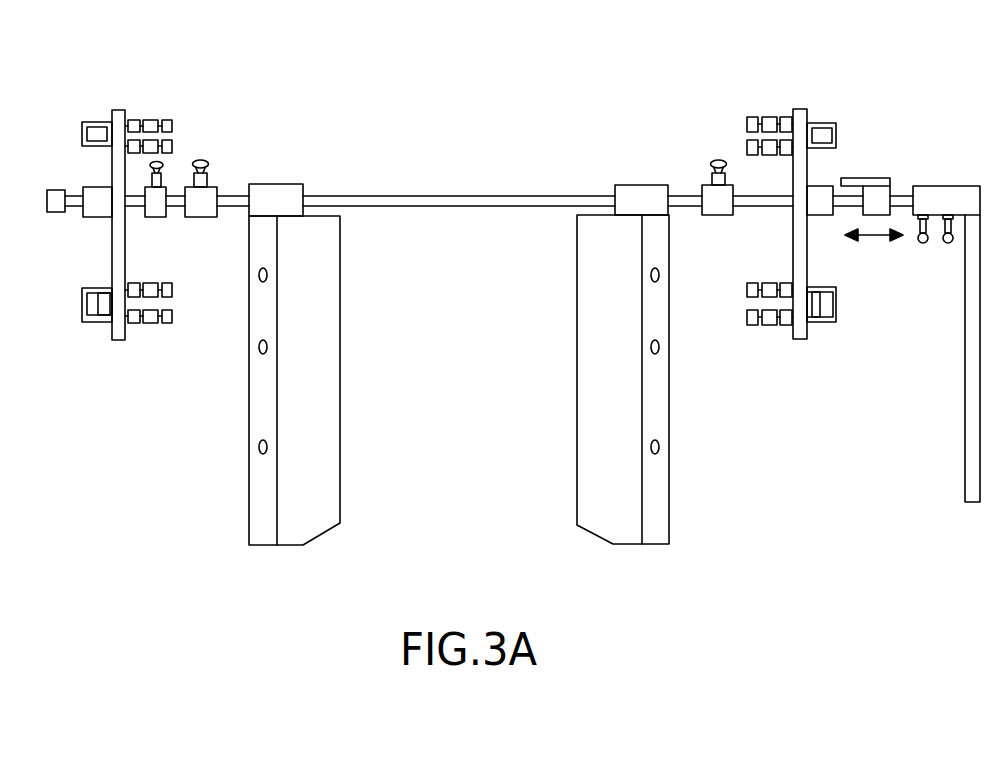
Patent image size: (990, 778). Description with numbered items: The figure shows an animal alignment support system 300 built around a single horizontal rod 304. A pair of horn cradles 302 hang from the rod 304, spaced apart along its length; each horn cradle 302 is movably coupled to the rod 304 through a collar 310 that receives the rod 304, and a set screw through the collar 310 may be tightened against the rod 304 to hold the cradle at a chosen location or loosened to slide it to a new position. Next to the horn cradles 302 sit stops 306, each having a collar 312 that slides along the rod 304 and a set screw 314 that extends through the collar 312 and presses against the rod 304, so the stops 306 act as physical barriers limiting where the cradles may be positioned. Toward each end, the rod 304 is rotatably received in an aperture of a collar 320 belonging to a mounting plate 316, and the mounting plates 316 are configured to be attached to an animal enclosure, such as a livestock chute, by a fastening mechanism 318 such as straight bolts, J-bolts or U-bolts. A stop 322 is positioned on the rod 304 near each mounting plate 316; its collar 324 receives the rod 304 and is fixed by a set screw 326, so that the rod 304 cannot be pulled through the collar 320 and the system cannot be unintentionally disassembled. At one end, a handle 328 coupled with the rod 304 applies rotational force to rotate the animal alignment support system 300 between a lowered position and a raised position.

The animal alignment support system 300 is at (522, 78).
The horn cradles 302 is at (608, 525).
The rod 304 is at (480, 201).
The stops 306 is at (213, 187).
The collar 310 is at (637, 190).
The collar 312 is at (718, 215).
The set screw 314 is at (715, 160).
The mounting plates 316 is at (113, 110).
The fastening mechanism 318 is at (780, 326).
The collar 320 is at (93, 217).
The stop 322 is at (163, 185).
The collar 324 is at (155, 217).
The set screw 326 is at (150, 163).
The handle 328 is at (967, 496).